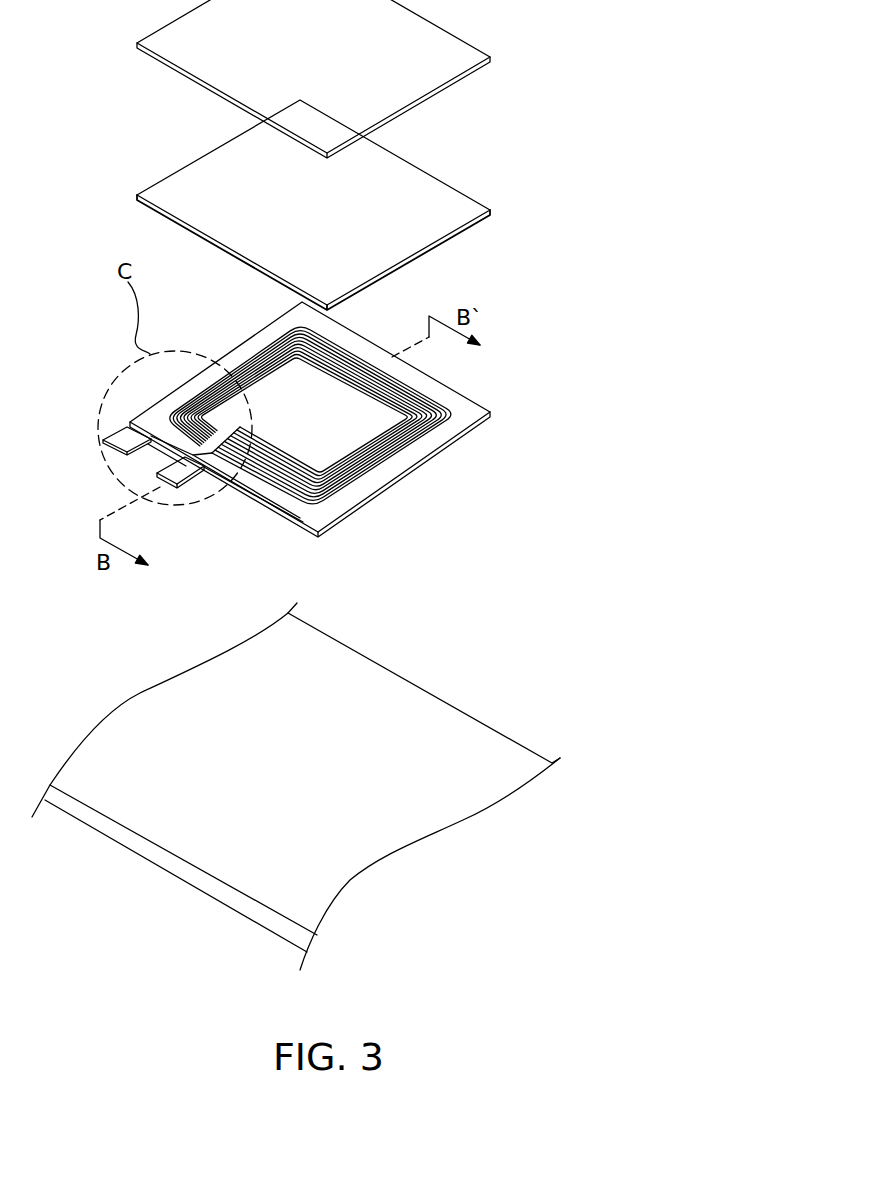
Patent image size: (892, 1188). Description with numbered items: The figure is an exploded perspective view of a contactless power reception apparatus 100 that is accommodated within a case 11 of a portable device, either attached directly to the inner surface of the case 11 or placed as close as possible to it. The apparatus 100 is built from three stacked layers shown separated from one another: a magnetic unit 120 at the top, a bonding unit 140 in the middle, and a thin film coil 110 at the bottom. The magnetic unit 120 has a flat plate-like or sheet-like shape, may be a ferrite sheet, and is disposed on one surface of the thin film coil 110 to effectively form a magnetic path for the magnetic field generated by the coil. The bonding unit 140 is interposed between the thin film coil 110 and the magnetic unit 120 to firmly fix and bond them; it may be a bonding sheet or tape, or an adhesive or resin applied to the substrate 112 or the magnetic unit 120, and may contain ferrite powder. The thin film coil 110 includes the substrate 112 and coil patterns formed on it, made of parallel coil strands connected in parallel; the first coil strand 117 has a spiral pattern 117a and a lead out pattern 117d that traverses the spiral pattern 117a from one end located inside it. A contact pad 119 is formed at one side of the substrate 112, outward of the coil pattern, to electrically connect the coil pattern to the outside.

The contactless power reception apparatus 100 is at (577, 47).
The magnetic unit 120 is at (468, 44).
The bonding unit 140 is at (440, 192).
The thin film coil 110 is at (470, 387).
The substrate 112 is at (362, 493).
The first coil strand 117 is at (289, 581).
The spiral pattern 117a is at (277, 490).
The lead out pattern 117d is at (228, 476).
The contact pad 119 is at (128, 432).
The case 11 is at (345, 880).